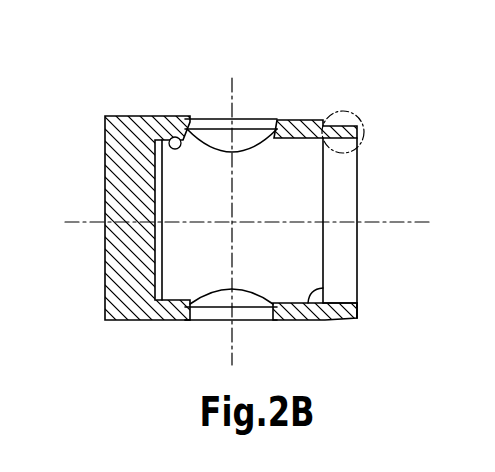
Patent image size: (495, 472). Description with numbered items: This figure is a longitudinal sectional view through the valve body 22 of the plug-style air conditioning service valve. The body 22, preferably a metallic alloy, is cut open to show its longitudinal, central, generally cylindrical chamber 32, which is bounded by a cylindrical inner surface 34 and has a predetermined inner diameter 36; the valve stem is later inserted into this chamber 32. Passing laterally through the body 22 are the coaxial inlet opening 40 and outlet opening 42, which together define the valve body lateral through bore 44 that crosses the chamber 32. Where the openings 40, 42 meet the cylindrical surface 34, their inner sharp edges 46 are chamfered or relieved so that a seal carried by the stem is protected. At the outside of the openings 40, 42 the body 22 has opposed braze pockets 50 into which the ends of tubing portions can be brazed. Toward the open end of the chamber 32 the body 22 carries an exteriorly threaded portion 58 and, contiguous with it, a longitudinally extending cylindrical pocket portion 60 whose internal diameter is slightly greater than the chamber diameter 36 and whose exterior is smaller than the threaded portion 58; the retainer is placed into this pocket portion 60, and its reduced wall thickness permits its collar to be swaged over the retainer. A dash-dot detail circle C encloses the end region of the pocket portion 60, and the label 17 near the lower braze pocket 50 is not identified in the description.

The valve body 22 is at (108, 92).
The cylindrical inner surface 34 is at (178, 116).
The inlet opening 40 is at (204, 118).
The valve body lateral through bore 44 is at (240, 141).
The braze pockets 50 is at (271, 120).
The detail circle C is at (360, 115).
The pocket portion 60 is at (337, 188).
The chamber 32 is at (277, 197).
The inner sharp edges 46 is at (253, 293).
The inner diameter 36 is at (158, 250).
The bottom plate edge 17 is at (192, 322).
The outlet opening 42 is at (232, 312).
The exteriorly threaded portion 58 is at (315, 320).